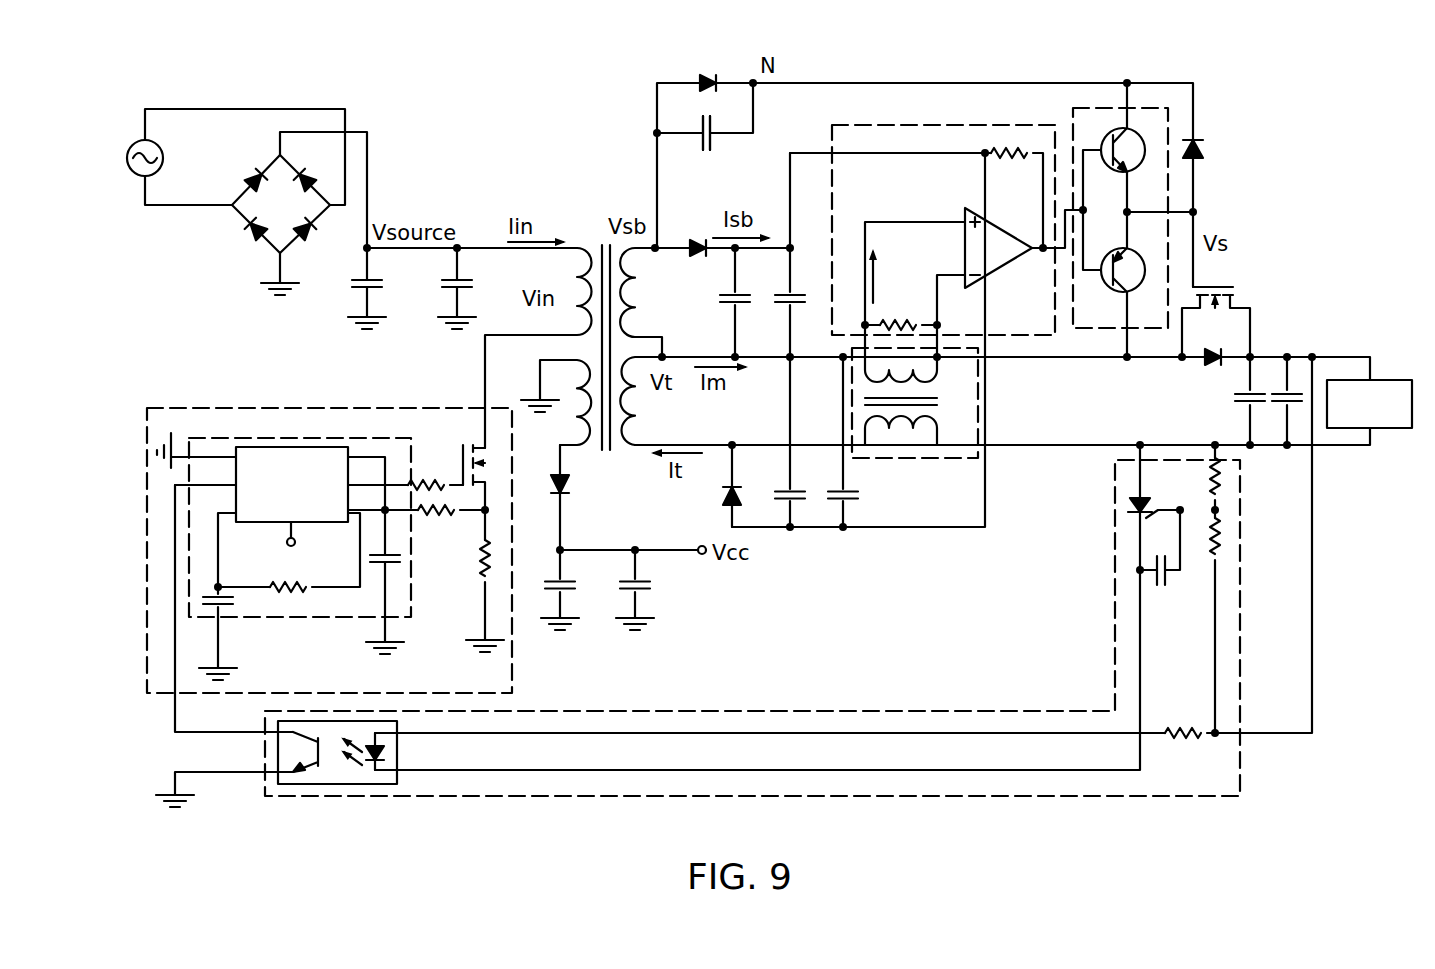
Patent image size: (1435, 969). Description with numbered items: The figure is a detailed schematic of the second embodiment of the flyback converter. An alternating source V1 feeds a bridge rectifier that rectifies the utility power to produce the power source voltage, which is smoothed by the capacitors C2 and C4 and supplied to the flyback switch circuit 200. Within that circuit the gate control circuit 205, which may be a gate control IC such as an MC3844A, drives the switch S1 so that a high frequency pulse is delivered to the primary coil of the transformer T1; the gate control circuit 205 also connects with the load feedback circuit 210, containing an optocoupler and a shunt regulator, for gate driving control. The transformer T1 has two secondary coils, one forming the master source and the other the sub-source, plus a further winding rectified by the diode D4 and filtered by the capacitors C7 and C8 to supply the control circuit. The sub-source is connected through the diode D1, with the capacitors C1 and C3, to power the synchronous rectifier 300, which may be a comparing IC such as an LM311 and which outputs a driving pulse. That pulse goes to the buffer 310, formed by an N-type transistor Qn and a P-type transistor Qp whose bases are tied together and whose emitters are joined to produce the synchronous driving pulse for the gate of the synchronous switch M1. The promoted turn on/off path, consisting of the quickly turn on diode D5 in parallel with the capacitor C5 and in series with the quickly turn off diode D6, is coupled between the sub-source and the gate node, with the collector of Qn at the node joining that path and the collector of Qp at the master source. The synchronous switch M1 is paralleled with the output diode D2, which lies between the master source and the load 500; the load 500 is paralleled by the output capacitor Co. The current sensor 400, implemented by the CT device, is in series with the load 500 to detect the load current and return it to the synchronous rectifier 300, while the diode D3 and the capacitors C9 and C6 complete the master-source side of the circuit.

The flyback switch circuit 200 is at (180, 415).
The gate control circuit 205 is at (388, 438).
The load feedback circuit 210 is at (925, 712).
The synchronous rectifier 300 is at (905, 127).
The buffer 310 is at (1152, 198).
The current sensor 400 is at (915, 431).
The load 500 is at (1408, 384).
The AC voltage source V1 is at (236, 157).
The capacitor C2 is at (348, 288).
The capacitor C4 is at (447, 288).
The transformer T1 is at (608, 359).
The switch S1 is at (465, 445).
The diode D1 is at (700, 263).
The output diode D2 is at (1213, 370).
The diode D3 is at (716, 486).
The diode D4 is at (578, 497).
The quickly turn on diode D5 is at (705, 72).
The quickly turn off diode D6 is at (1214, 158).
The capacitor C1 is at (722, 302).
The capacitor C3 is at (781, 255).
The capacitor C5 is at (711, 147).
The capacitor C6 is at (854, 442).
The capacitor C7 is at (568, 590).
The capacitor C8 is at (642, 590).
The capacitor C9 is at (780, 442).
The output capacitor Co is at (1259, 401).
The CT device CT is at (916, 407).
The N-type transistor Qn is at (1129, 147).
The P-type transistor Qp is at (1129, 284).
The synchronous switch M1 is at (1235, 300).